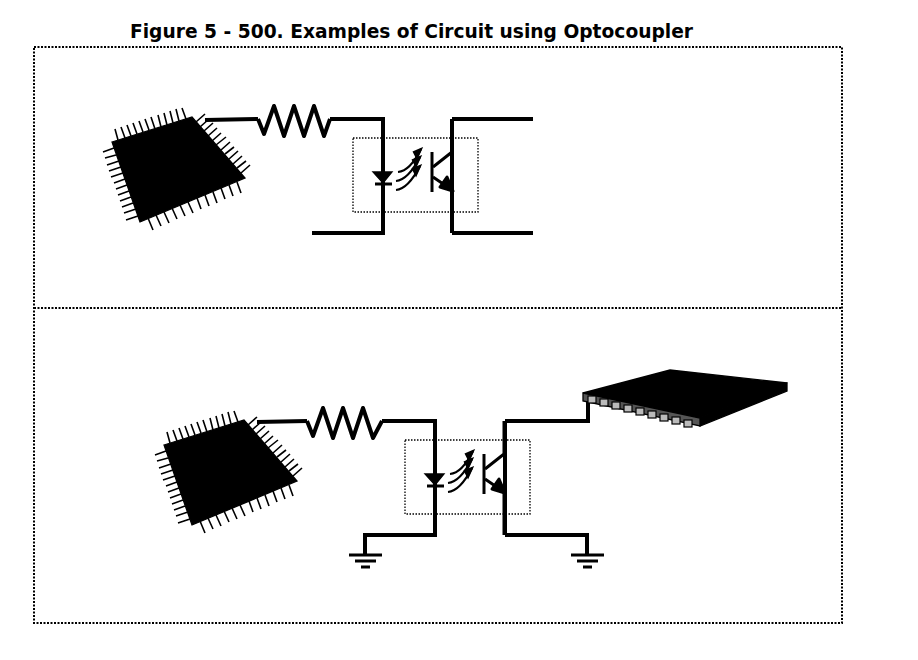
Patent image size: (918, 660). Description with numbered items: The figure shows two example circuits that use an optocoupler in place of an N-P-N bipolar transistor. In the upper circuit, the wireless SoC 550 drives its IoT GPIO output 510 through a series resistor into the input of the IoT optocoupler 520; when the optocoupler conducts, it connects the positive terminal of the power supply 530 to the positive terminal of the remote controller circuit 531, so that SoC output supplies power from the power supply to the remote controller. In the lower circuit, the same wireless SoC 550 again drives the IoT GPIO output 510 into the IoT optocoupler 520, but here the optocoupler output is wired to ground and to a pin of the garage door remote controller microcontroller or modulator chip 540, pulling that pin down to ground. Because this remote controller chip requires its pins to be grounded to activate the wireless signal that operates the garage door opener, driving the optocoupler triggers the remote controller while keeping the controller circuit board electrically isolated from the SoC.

The IoT GPIO output 510 is at (284, 252).
The IoT optocoupler 520 is at (441, 304).
The positive terminal of power supply 530 is at (590, 122).
The positive terminal of remote controller circuit 531 is at (605, 244).
The garage door remote controller microcontroller / modulator chip 540 is at (691, 465).
The wireless SoC 550 is at (178, 348).